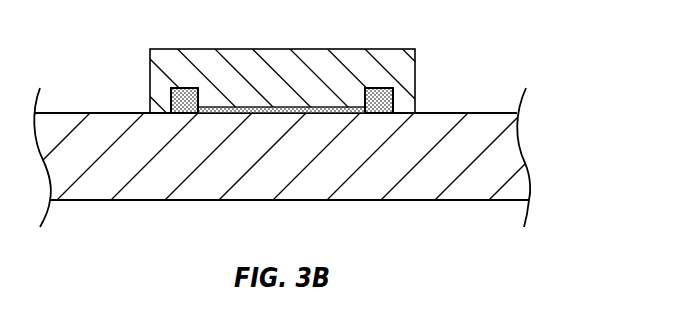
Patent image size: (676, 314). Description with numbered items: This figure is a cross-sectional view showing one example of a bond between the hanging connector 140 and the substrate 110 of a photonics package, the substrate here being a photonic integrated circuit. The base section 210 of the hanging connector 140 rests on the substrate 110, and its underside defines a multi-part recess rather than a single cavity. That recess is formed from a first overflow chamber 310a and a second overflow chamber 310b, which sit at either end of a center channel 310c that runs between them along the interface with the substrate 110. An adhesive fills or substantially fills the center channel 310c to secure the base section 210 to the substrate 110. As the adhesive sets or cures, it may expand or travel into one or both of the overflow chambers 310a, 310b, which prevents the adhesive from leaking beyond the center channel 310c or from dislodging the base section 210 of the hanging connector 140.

The substrate 110 is at (530, 146).
The hanging connector 140 is at (271, 65).
The base section 210 is at (415, 80).
The first overflow chamber 310a is at (185, 88).
The second overflow chamber 310b is at (376, 88).
The center channel 310c is at (280, 107).